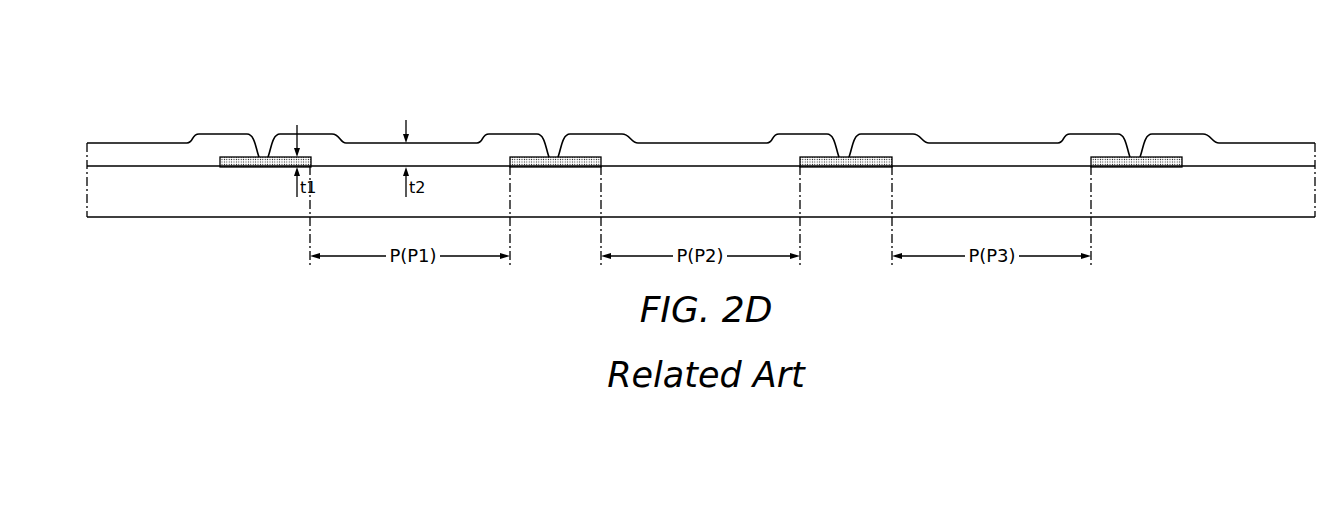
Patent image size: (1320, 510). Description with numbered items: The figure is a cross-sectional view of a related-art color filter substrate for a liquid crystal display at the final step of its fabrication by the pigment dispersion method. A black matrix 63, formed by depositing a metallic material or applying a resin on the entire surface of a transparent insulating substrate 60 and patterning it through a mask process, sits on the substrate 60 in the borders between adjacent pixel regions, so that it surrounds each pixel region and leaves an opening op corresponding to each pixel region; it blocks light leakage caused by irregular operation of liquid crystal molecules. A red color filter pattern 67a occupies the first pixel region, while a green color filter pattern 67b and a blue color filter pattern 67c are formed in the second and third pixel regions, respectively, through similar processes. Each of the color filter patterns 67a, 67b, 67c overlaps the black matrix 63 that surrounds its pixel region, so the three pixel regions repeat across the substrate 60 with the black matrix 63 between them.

The transparent insulating substrate 60 is at (1283, 206).
The black matrix 63 is at (262, 157).
The red color filter pattern 67a is at (450, 157).
The green color filter pattern 67b is at (730, 155).
The blue color filter pattern 67c is at (150, 155).
The opening op is at (413, 150).